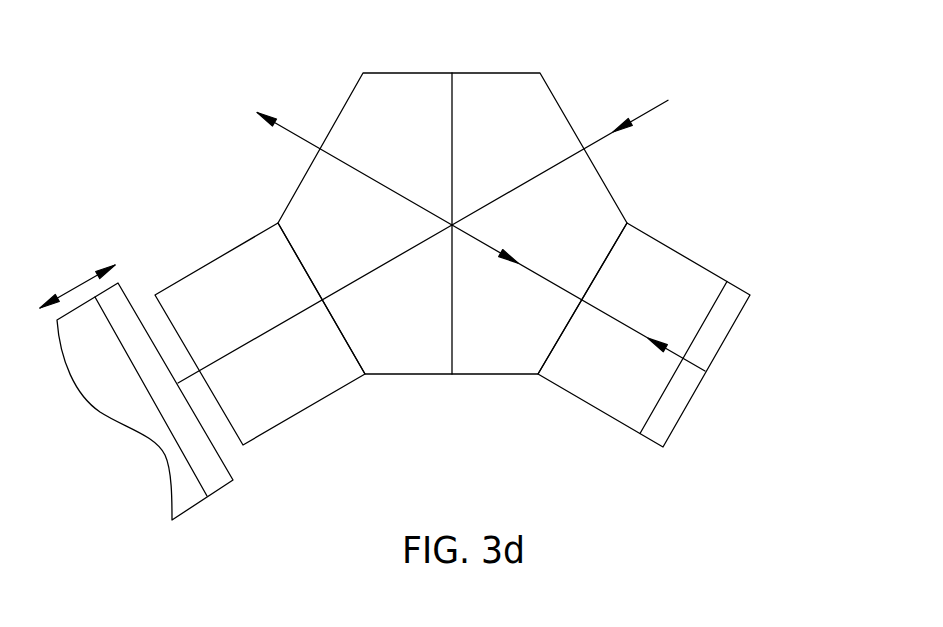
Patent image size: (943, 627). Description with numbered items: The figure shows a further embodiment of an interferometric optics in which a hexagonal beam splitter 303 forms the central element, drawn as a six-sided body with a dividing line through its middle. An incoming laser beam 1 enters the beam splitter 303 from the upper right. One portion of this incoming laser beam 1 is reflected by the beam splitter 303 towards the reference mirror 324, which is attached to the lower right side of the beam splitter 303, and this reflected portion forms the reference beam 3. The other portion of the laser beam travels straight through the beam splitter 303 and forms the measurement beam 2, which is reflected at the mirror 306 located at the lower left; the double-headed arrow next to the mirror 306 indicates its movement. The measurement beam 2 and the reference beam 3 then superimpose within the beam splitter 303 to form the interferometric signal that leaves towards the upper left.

The hexagonal beam splitter 303 is at (560, 107).
The incoming laser beam 1 is at (652, 107).
The measurement beam 2 is at (385, 264).
The reference beam 3 is at (537, 274).
The reference mirror 324 is at (752, 279).
The mirror 306 is at (220, 485).